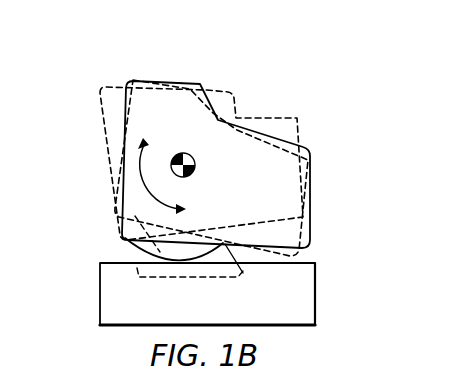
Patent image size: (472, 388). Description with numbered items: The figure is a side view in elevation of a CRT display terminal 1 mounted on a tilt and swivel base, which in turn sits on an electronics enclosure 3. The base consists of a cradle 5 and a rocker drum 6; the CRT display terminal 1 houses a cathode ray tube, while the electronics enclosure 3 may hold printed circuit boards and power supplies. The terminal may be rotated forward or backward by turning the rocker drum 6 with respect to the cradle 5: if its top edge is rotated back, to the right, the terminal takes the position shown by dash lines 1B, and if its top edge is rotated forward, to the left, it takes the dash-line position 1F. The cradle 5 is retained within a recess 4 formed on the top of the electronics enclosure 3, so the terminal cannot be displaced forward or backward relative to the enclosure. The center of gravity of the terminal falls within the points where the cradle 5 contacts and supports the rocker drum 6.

The CRT display terminal 1 is at (125, 90).
The forward rotated position of CRT display terminal 1F is at (97, 92).
The backward rotated position of CRT display terminal 1B is at (133, 78).
The electronics enclosure 3 is at (318, 288).
The recess 4 is at (137, 268).
The cradle 5 is at (150, 262).
The rocker drum 6 is at (224, 245).